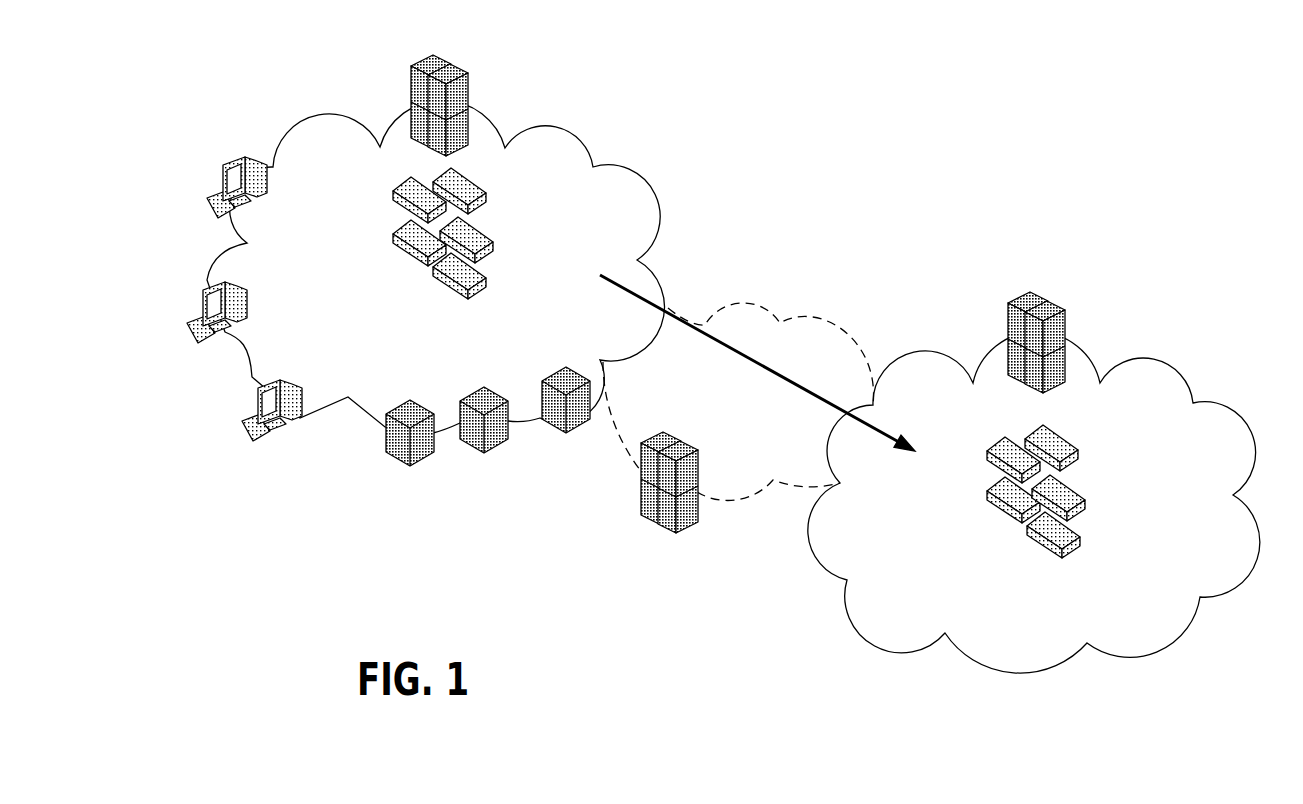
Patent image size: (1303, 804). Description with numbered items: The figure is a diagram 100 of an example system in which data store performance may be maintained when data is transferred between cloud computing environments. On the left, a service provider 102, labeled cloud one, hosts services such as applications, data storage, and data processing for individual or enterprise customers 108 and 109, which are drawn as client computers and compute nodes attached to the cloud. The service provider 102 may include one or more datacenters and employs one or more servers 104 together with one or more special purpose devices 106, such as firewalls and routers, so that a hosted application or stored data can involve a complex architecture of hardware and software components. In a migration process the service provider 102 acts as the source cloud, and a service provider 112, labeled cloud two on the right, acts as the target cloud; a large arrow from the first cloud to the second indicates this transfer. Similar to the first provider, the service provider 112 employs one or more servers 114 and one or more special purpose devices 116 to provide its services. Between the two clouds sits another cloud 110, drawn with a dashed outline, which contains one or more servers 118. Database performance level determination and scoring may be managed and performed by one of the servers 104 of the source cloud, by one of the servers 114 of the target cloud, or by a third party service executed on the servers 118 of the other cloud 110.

The diagram 100 is at (703, 346).
The service provider 102 is at (375, 338).
The servers 104 is at (450, 46).
The special purpose devices 106 is at (492, 191).
The customers 108 is at (238, 416).
The customers 109 is at (541, 377).
The another cloud 110 is at (779, 299).
The service provider 112 is at (972, 576).
The servers 114 is at (1047, 282).
The special purpose devices 116 is at (1085, 446).
The servers 118 is at (692, 538).